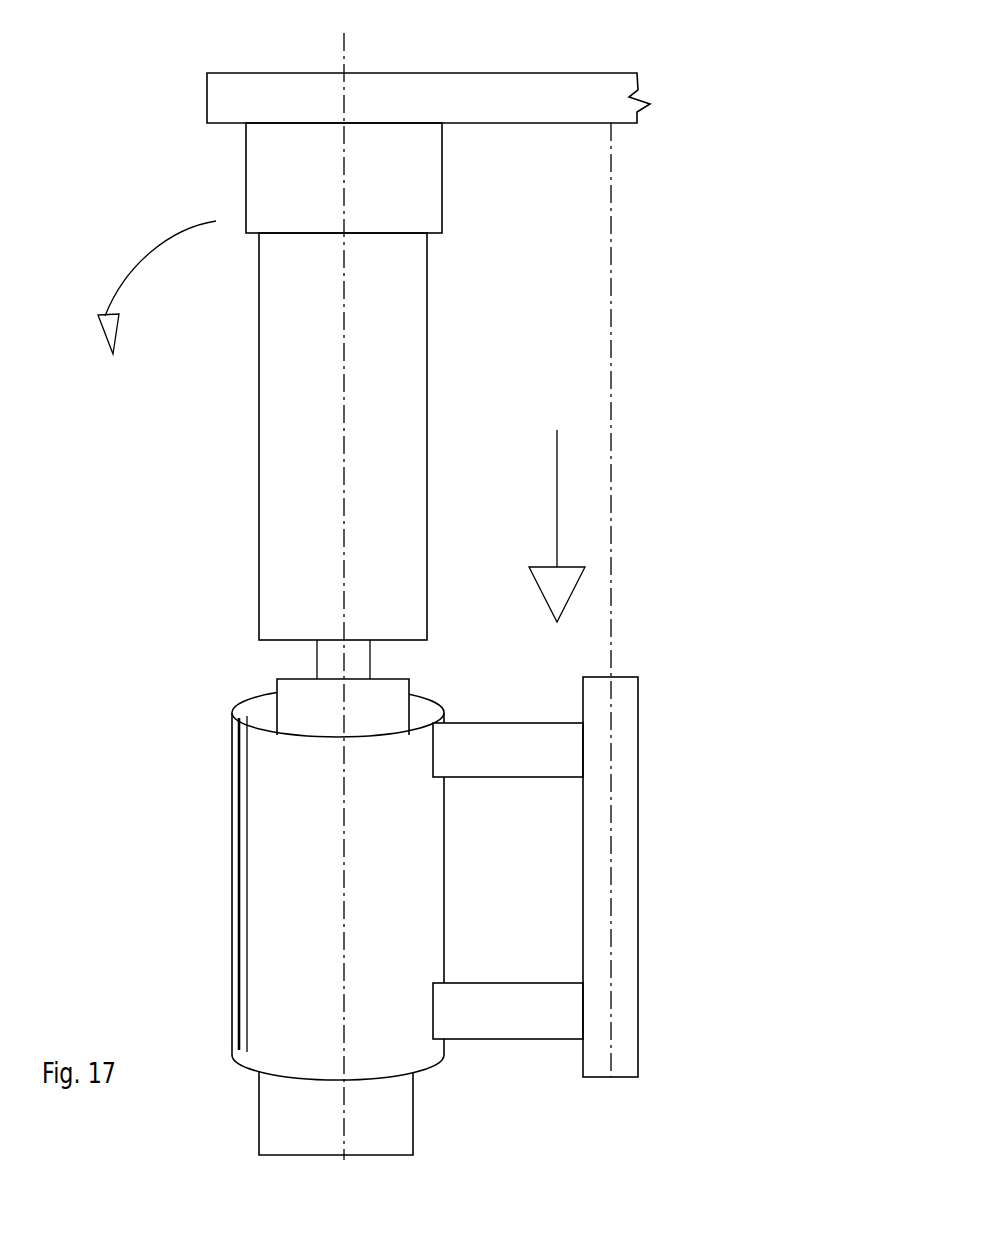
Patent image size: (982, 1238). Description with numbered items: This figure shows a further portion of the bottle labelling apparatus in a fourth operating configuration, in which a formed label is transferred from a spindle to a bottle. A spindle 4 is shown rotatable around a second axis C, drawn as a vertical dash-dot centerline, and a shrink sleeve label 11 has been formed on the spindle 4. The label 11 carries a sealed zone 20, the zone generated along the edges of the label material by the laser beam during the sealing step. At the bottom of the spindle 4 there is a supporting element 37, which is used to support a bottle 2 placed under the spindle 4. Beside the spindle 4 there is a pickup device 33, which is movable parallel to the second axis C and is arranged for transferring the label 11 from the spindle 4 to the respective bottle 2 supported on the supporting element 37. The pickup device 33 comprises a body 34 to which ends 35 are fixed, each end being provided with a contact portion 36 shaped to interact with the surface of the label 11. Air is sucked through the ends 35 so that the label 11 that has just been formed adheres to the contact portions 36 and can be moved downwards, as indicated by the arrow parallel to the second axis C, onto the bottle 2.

The second axis C is at (344, 53).
The spindle 4 is at (208, 441).
The supporting element 37 is at (288, 689).
The label 11 is at (404, 907).
The sealed zone 20 is at (237, 905).
The bottle 2 is at (280, 1133).
The ends 35 is at (548, 760).
The contact portion 36 is at (447, 745).
The body 34 is at (630, 917).
The pickup device 33 is at (722, 843).